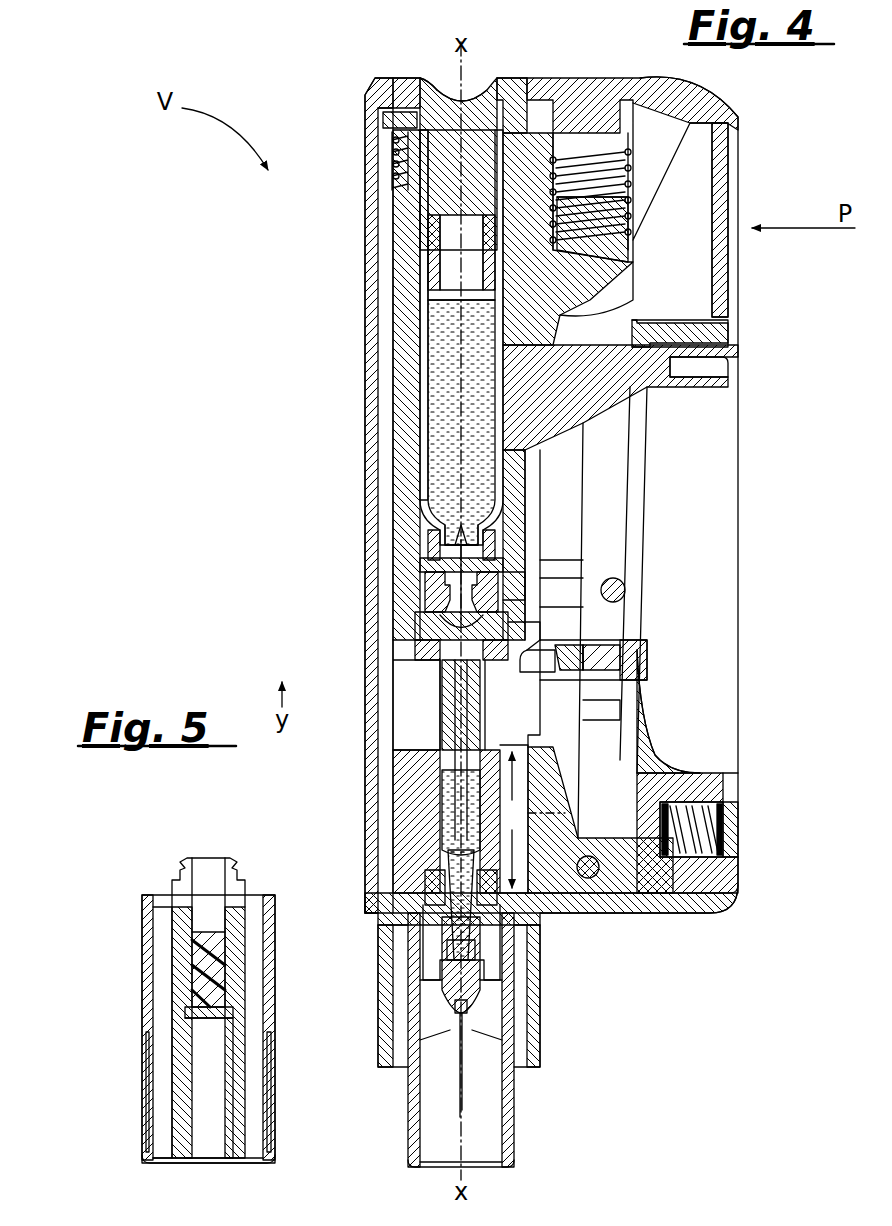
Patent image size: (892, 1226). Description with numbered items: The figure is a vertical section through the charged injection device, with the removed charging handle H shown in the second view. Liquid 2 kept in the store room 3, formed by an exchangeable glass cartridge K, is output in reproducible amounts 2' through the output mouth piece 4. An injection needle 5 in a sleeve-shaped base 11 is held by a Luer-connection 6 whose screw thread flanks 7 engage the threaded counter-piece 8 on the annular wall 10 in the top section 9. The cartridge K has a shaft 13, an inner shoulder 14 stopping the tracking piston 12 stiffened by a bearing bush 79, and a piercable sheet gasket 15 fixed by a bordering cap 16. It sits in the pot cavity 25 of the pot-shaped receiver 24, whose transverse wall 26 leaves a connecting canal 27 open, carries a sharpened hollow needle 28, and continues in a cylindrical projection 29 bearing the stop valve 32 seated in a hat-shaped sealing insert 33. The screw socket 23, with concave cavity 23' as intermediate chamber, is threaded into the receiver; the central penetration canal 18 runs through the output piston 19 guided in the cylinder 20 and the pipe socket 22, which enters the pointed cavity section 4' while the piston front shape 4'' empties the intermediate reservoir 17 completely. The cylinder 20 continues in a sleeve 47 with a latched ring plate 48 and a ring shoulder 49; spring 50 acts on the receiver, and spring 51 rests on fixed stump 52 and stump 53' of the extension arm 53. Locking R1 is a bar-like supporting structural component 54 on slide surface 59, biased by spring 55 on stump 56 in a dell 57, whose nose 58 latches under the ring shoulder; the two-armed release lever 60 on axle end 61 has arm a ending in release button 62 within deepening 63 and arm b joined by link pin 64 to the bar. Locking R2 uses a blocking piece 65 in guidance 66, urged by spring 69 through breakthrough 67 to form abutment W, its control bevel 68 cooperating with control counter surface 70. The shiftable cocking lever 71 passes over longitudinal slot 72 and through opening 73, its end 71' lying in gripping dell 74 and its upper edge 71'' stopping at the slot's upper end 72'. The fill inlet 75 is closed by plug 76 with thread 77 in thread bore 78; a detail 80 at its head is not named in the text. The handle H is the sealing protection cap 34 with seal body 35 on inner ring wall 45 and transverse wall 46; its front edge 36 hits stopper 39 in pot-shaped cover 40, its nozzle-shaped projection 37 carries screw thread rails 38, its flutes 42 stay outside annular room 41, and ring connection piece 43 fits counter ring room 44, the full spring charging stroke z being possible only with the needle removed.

In FIG. 4, the liquid 2 is at (410, 337).
In FIG. 4, the amount 2' is at (397, 812).
In FIG. 4, the store room 3 is at (470, 410).
In FIG. 4, the output mouth piece 4 is at (399, 967).
In FIG. 4, the pointed cavity section 4' is at (395, 962).
In FIG. 4, the shape 4'' is at (393, 905).
In FIG. 4, the injection needle 5 is at (455, 1105).
In FIG. 4, the Luer-connection 6 is at (516, 1005).
In FIG. 4, the screw thread flanks 7 is at (514, 965).
In FIG. 4, the threaded counter-piece 8 is at (445, 940).
In FIG. 4, the top section 9 is at (530, 1095).
In FIG. 4, the annular wall 10 is at (435, 905).
In FIG. 4, the sleeve-shaped base 11 is at (455, 1012).
In FIG. 4, the tracking piston 12 is at (432, 258).
In FIG. 4, the shaft 13 is at (432, 518).
In FIG. 4, the inner shoulder 14 is at (452, 520).
In FIG. 4, the piercable sheet gasket 15 is at (445, 546).
In FIG. 4, the bordering cap 16 is at (432, 558).
In FIG. 4, the intermediate reservoir 17 is at (455, 810).
In FIG. 4, the central penetration canal 18 is at (440, 690).
In FIG. 4, the output piston 19 is at (440, 715).
In FIG. 4, the cylinder 20 is at (445, 752).
In FIG. 4, the central pipe socket 22 is at (435, 780).
In FIG. 4, the screw socket 23 is at (399, 593).
In FIG. 4, the semi-spherical concave cavity 23' is at (403, 653).
In FIG. 4, the pot-shaped receiver 24 is at (407, 457).
In FIG. 4, the pot cavity 25 is at (510, 520).
In FIG. 4, the transverse wall 26 is at (540, 578).
In FIG. 4, the connecting canal 27 is at (500, 582).
In FIG. 4, the sharpened hollow needle 28 is at (560, 565).
In FIG. 4, the cylindrical projection 29 is at (545, 607).
In FIG. 4, the stop valve 32 is at (432, 623).
In FIG. 4, the hat-shaped sealing insert 33 is at (555, 625).
In FIG. 5, the sealing protection cap 34 is at (148, 1159).
In FIG. 5, the seal body 35 is at (194, 958).
In FIG. 5, the front edge 36 is at (144, 892).
In FIG. 5, the nozzle-shaped projection 37 is at (184, 869).
In FIG. 5, the screw thread rails 38 is at (231, 855).
In FIG. 4, the casing-sided stopper 39 is at (512, 940).
In FIG. 4, the pot-shaped cover 40 is at (395, 1050).
In FIG. 4, the annular room 41 is at (400, 1085).
In FIG. 5, the flutes 42 is at (142, 1056).
In FIG. 4, the central ring connection piece 43 is at (515, 1105).
In FIG. 5, the counter ring room 44 is at (165, 1100).
In FIG. 5, the inner ring wall 45 is at (177, 1133).
In FIG. 5, the transverse wall 46 is at (194, 1007).
In FIG. 4, the sleeve 47 is at (398, 382).
In FIG. 4, the ring plate 48 is at (395, 117).
In FIG. 4, the ring shoulder 49 is at (545, 735).
In FIG. 4, the spring 50 is at (397, 155).
In FIG. 4, the spring 51 is at (620, 140).
In FIG. 4, the stump 52 is at (592, 130).
In FIG. 4, the extension arm 53 is at (686, 229).
In FIG. 4, the stump 53' is at (689, 210).
In FIG. 4, the supporting structural component 54 is at (570, 900).
In FIG. 4, the spring 55 is at (722, 808).
In FIG. 4, the stump 56 is at (717, 835).
In FIG. 4, the dell 57 is at (680, 868).
In FIG. 4, the nose 58 is at (650, 760).
In FIG. 4, the slide surface 59 is at (625, 892).
In FIG. 4, the release lever 60 is at (612, 528).
In FIG. 4, the axle end 61 is at (627, 590).
In FIG. 4, the release button 62 is at (722, 142).
In FIG. 4, the deepening 63 is at (733, 172).
In FIG. 4, the link pin 64 is at (600, 882).
In FIG. 4, the blocking piece 65 is at (595, 658).
In FIG. 4, the guidance 66 is at (575, 672).
In FIG. 4, the breakthrough 67 is at (540, 682).
In FIG. 4, the control bevel 68 is at (590, 660).
In FIG. 4, the spring 69 is at (600, 652).
In FIG. 4, the control counter surface 70 is at (562, 783).
In FIG. 4, the shiftable cocking lever 71 is at (659, 397).
In FIG. 4, the end 71' is at (727, 329).
In FIG. 4, the upper edge 71'' is at (590, 296).
In FIG. 4, the longitudinal slot 72 is at (638, 630).
In FIG. 4, the upper end 72' is at (662, 239).
In FIG. 4, the opening 73 is at (640, 432).
In FIG. 4, the gripping dell 74 is at (720, 380).
In FIG. 4, the fill inlet 75 is at (387, 107).
In FIG. 4, the plug 76 is at (470, 112).
In FIG. 4, the thread 77 is at (430, 86).
In FIG. 4, the thread bore 78 is at (512, 92).
In FIG. 4, the bearing bush 79 is at (432, 272).
In FIG. 4, the push surface 80 is at (447, 84).
In FIG. 4, the arm a is at (610, 503).
In FIG. 4, the arm b is at (628, 720).
In FIG. 5, the charging handle H is at (136, 985).
In FIG. 4, the cartridge K is at (412, 327).
In FIG. 4, the locking R1 is at (642, 780).
In FIG. 4, the locking R2 is at (658, 652).
In FIG. 4, the abutment W is at (527, 660).
In FIG. 4, the spring charging stroke z is at (514, 819).